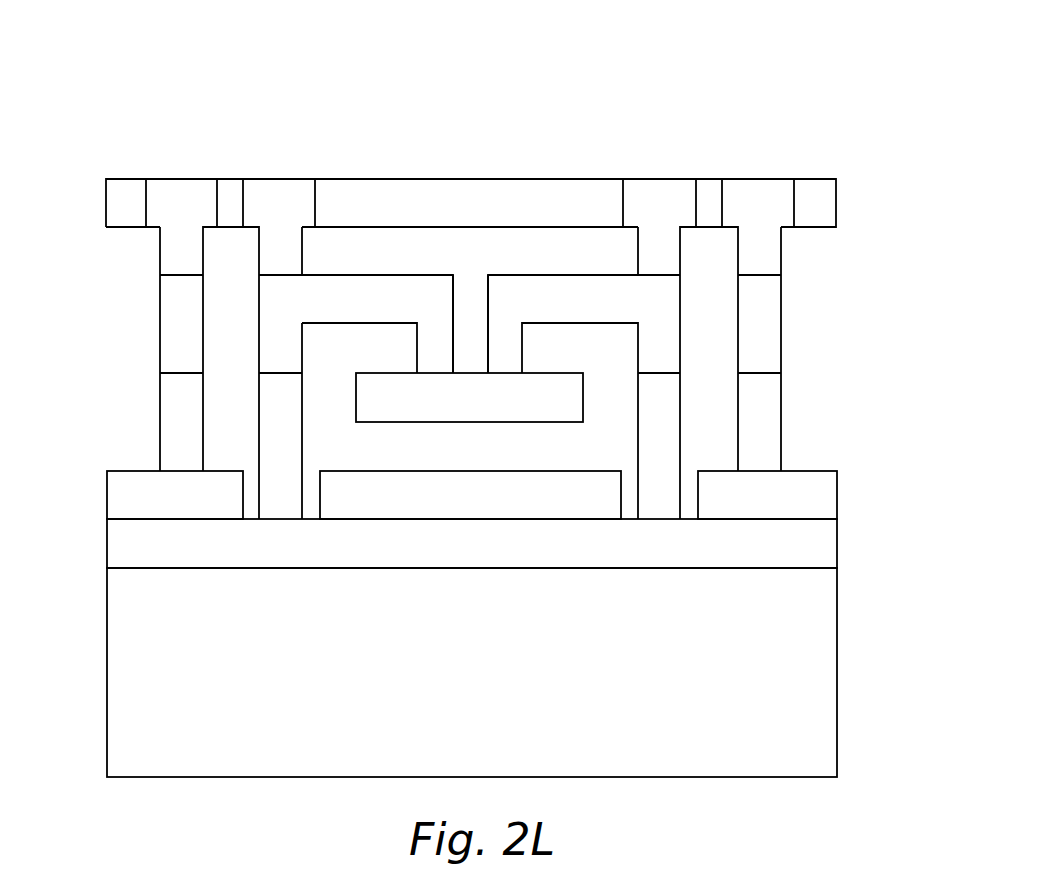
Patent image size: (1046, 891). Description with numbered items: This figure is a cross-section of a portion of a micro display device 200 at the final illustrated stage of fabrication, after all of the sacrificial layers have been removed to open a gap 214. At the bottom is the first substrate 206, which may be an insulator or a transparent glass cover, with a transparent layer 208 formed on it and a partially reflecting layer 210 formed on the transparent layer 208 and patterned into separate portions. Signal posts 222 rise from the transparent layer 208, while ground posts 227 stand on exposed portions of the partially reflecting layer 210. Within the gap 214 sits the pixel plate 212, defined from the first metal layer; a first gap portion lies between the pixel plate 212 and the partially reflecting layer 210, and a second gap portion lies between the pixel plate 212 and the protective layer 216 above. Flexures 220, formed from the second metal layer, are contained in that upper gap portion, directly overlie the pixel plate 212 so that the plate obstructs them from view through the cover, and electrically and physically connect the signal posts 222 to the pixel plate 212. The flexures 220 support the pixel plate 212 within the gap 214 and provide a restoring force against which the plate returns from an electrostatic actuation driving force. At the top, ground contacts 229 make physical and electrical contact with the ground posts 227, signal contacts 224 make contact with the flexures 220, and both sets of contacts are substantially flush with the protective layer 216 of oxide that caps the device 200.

The device 200 is at (758, 62).
The first substrate 206 is at (516, 659).
The transparent layer 208 is at (513, 557).
The partially reflecting layer 210 is at (171, 506).
The pixel plate 212 is at (454, 411).
The gap 214 is at (325, 268).
The protective layer 216 is at (118, 204).
The flexures 220 is at (329, 312).
The signal posts 222 is at (282, 512).
The signal contacts 224 is at (280, 185).
The ground posts 227 is at (172, 325).
The ground contacts 229 is at (192, 185).